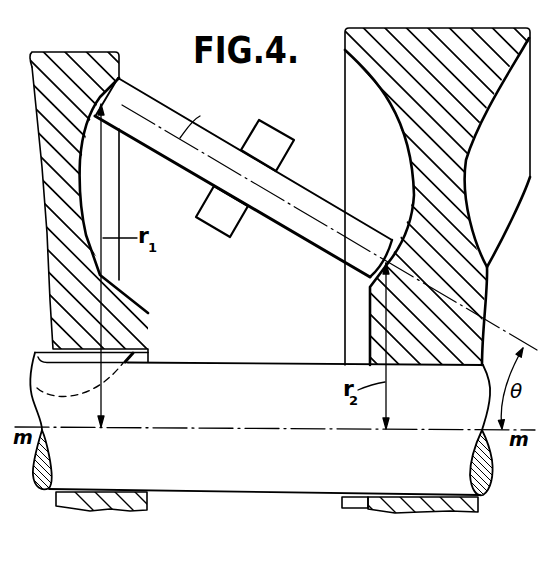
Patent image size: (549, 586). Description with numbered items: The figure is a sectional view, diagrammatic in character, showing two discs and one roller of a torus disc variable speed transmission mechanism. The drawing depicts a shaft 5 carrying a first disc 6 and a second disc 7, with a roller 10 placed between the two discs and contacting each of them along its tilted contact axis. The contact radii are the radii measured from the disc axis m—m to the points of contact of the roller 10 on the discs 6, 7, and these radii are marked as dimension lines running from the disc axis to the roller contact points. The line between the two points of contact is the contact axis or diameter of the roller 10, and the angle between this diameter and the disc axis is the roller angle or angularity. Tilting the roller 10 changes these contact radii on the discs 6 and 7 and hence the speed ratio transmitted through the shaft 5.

The shaft 5 is at (227, 377).
The inner ring 6 is at (77, 63).
The outer ring 7 is at (428, 42).
The roller 10 is at (313, 242).